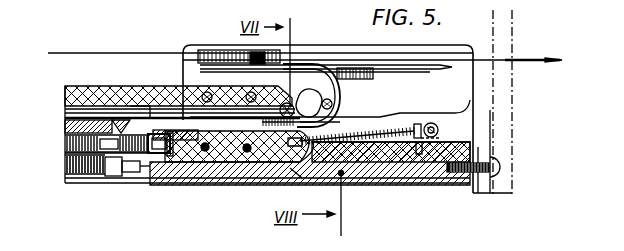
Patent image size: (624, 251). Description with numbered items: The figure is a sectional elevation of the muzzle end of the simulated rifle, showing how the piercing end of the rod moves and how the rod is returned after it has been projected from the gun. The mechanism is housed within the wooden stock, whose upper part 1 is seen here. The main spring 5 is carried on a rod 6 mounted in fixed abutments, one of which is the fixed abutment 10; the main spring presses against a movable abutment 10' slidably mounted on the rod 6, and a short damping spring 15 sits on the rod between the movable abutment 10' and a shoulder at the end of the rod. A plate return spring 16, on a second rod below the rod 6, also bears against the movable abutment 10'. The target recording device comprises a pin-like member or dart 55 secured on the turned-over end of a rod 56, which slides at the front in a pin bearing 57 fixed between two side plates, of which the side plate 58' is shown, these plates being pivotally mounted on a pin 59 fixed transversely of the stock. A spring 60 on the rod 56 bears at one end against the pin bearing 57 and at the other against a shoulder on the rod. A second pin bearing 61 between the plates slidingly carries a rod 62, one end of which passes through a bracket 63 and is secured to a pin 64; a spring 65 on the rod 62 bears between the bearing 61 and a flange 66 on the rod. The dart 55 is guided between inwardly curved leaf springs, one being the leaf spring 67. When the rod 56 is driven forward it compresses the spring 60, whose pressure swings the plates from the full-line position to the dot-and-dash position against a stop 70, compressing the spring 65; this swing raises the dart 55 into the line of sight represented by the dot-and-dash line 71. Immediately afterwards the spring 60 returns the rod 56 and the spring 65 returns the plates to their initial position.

The upper part of stock 1 is at (112, 112).
The main spring 5 is at (65, 143).
The rod 6 is at (118, 114).
The fixed abutment 10 is at (267, 172).
The movable abutment 10' is at (124, 192).
The damping spring 15 is at (134, 116).
The plate return spring 16 is at (72, 183).
The pin-like member or dart 55 is at (487, 62).
The rod 56 is at (331, 101).
The pin bearing 57 is at (114, 115).
The side plate 58' is at (305, 189).
The pin 59 is at (342, 176).
The spring 60 is at (252, 153).
The second pin bearing 61 is at (338, 122).
The rod 62 is at (373, 153).
The bracket 63 is at (419, 147).
The pin 64 is at (438, 130).
The spring 65 is at (393, 133).
The flange 66 is at (417, 129).
The leaf spring 67 is at (262, 65).
The stop 70 is at (313, 66).
The line of sight 71 is at (170, 55).